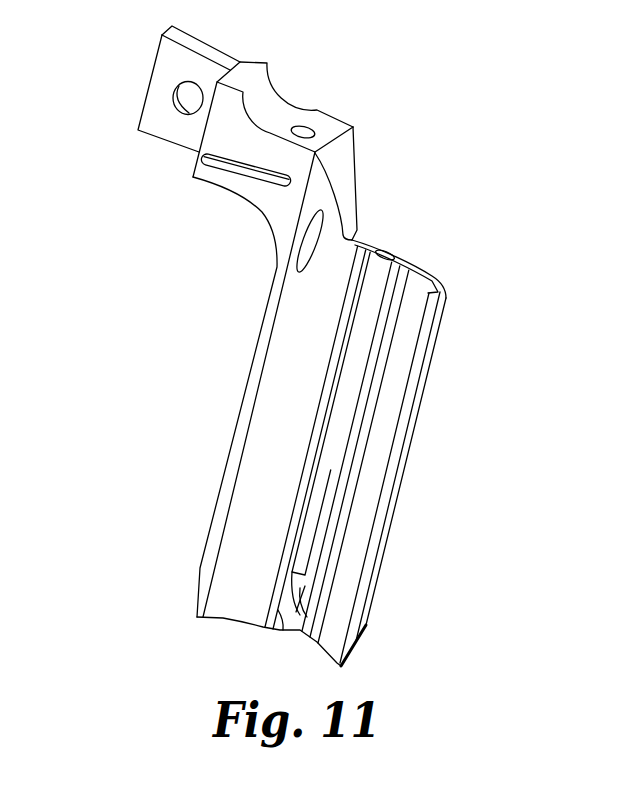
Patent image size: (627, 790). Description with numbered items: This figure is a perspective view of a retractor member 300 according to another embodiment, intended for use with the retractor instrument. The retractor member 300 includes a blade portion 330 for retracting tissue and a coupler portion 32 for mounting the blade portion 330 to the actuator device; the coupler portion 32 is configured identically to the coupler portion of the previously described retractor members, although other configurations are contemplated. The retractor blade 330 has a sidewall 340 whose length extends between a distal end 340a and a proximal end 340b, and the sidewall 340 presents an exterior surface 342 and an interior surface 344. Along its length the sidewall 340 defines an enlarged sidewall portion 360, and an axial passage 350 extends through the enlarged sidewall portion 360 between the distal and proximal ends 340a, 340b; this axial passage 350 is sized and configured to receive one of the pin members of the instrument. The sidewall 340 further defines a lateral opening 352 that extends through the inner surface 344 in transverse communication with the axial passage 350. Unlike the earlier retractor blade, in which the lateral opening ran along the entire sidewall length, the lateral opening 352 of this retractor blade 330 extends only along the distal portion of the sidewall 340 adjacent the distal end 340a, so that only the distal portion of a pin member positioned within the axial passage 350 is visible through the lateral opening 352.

The retractor member 300 is at (390, 126).
The coupler portion 32 is at (190, 187).
The blade portion 330 is at (212, 428).
The sidewall 340 is at (228, 478).
The distal end 340a is at (246, 635).
The proximal end 340b is at (457, 277).
The exterior surface 342 is at (427, 373).
The interior surface 344 is at (376, 456).
The axial passage 350 is at (388, 244).
The lateral opening 352 is at (300, 590).
The enlarged sidewall portion 360 is at (350, 362).